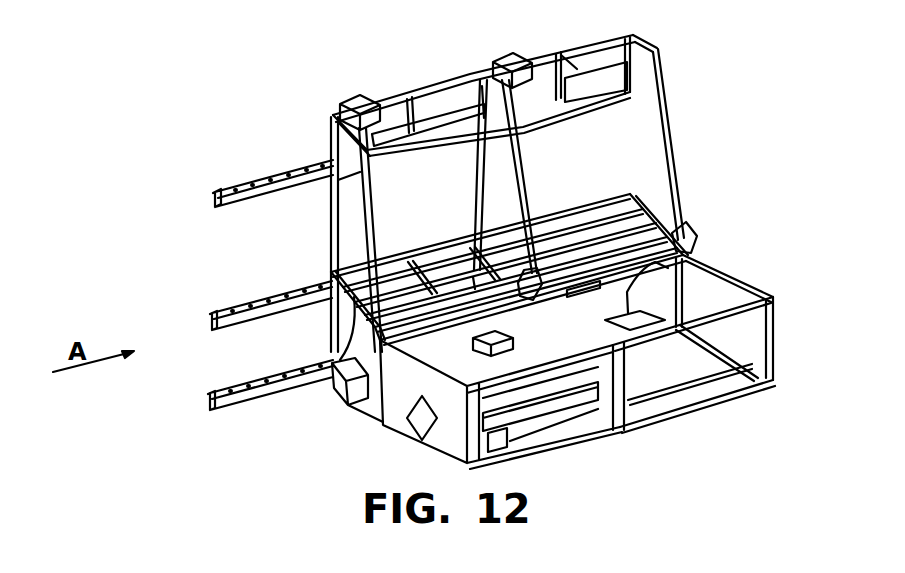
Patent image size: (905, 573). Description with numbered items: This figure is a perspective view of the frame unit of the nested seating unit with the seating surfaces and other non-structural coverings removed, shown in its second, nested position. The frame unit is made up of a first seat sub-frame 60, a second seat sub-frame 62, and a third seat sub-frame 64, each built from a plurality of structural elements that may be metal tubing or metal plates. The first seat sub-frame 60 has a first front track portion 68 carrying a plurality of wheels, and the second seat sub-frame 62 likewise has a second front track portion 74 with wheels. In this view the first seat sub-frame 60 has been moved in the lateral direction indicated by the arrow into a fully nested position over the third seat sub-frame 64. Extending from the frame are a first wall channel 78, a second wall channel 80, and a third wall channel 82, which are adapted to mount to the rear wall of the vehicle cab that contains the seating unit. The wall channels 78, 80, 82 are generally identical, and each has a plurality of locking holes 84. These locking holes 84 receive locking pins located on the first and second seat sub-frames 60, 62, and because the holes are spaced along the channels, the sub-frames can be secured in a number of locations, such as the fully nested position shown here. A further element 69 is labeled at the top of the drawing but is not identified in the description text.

The tilting upper frame assembly 60 is at (383, 100).
The upper frame end rail 62 is at (608, 35).
The upright post 64 is at (330, 243).
The lower storage box 68 is at (577, 440).
The frame member 69 is at (327, 0).
The lower open frame 74 is at (757, 384).
The upper support arm 78 is at (213, 200).
The middle support arm 80 is at (210, 325).
The lower support arm 82 is at (210, 405).
The apertures in support arms 84 is at (280, 172).